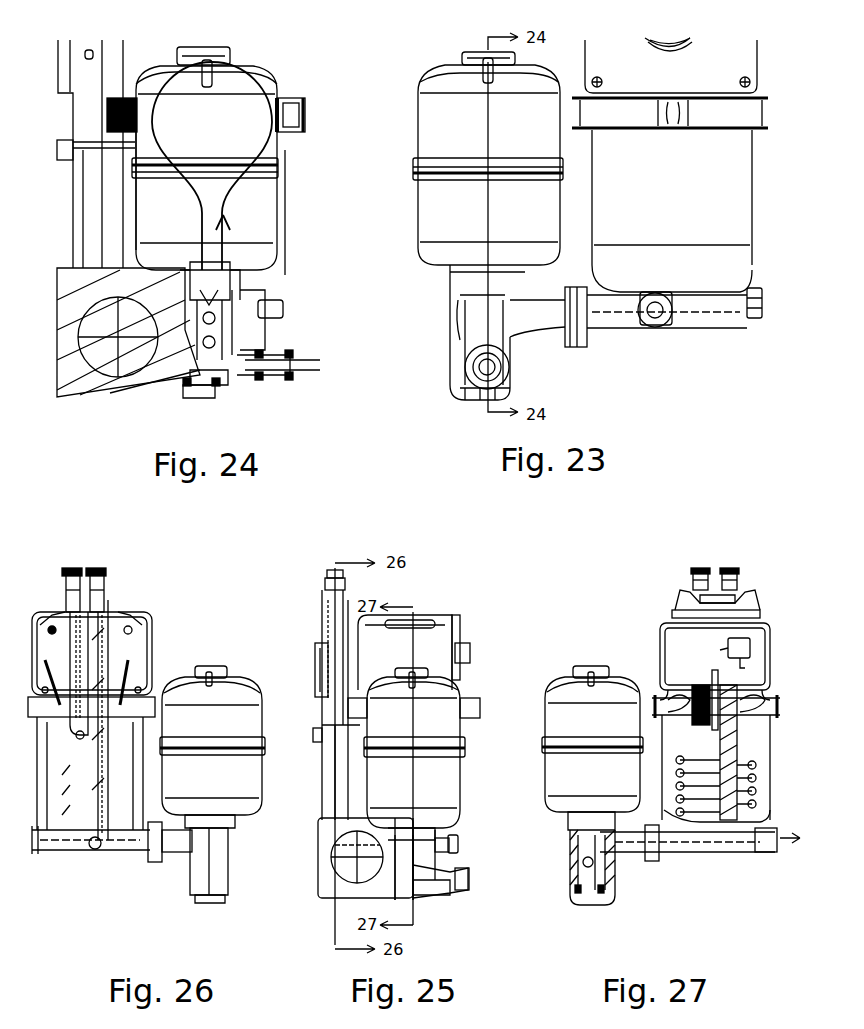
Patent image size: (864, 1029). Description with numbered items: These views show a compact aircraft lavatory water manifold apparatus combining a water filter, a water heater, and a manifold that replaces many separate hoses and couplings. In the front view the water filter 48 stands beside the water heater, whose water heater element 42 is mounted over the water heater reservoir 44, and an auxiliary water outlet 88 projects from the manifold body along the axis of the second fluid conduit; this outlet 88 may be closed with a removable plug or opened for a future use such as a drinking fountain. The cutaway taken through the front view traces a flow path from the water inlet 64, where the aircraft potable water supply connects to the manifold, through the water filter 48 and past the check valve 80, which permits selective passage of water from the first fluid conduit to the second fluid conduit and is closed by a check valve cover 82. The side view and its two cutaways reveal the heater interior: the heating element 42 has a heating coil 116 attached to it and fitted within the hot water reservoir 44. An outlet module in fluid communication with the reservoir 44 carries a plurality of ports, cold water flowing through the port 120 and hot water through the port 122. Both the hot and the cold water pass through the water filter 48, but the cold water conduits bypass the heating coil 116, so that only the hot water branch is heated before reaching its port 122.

In FIG. 23, the water heater element 42 is at (760, 86).
In FIG. 27, the water heater reservoir 44 is at (770, 730).
In FIG. 24, the water filter 48 is at (290, 182).
In FIG. 23, the water filter 48 is at (416, 138).
In FIG. 26, the water filter 48 is at (263, 760).
In FIG. 25, the water filter 48 is at (467, 742).
In FIG. 27, the water filter 48 is at (545, 730).
In FIG. 24, the inlet 64 is at (288, 350).
In FIG. 24, the check valve 80 is at (197, 347).
In FIG. 24, the check valve cover 82 is at (203, 400).
In FIG. 23, the check valve cover 82 is at (457, 398).
In FIG. 23, the auxiliary water outlet 88 is at (757, 328).
In FIG. 27, the heating coil 116 is at (753, 785).
In FIG. 26, the port 120 is at (106, 578).
In FIG. 27, the port 120 is at (692, 575).
In FIG. 26, the port 122 is at (70, 578).
In FIG. 27, the port 122 is at (738, 572).